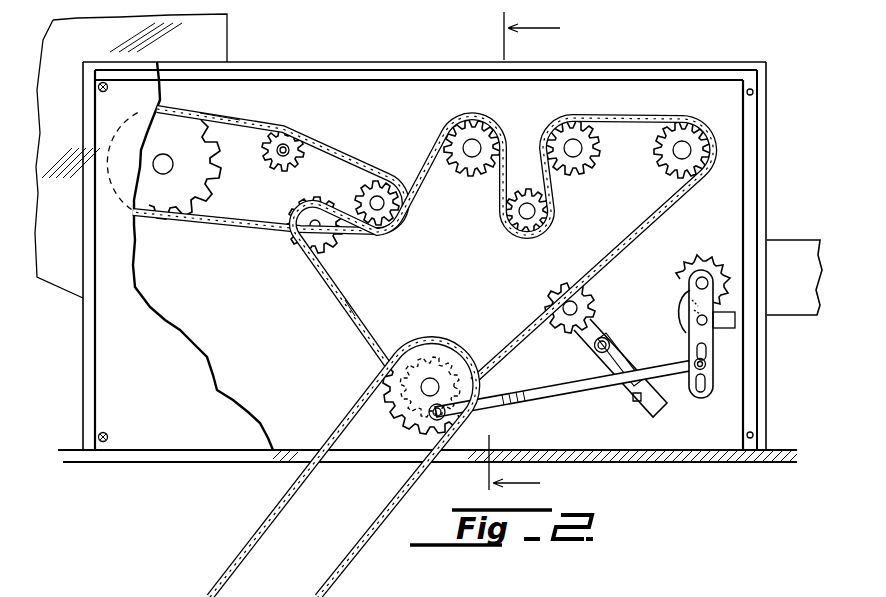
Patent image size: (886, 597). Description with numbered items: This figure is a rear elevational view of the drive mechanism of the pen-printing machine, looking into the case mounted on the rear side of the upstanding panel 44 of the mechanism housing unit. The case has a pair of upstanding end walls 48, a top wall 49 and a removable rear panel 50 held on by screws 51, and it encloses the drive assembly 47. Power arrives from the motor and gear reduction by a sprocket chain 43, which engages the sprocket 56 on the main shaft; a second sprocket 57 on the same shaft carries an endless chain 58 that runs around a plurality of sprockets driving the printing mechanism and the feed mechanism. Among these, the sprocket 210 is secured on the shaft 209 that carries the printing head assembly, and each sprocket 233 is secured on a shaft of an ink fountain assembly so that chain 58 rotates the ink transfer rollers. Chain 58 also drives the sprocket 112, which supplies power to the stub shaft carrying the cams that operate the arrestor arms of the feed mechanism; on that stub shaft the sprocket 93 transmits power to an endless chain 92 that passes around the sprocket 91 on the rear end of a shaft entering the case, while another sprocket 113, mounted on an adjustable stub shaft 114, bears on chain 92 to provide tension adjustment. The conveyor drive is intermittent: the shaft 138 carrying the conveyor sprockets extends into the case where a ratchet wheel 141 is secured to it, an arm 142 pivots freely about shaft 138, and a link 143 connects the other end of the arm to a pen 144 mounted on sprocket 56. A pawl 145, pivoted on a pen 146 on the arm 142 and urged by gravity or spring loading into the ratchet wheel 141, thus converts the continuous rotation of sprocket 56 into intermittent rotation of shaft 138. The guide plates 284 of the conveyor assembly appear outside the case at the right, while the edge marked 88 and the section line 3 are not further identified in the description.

The section line 3- 3 is at (524, 253).
The sprocket chain 43 is at (340, 578).
The upstanding panel 44 is at (393, 119).
The drive assembly 47 is at (634, 87).
The end walls 48 is at (768, 155).
The top wall 49 is at (351, 61).
The removable rear panel 50 is at (200, 400).
The screws 51 is at (108, 87).
The sprocket 56 is at (394, 420).
The sprocket 57 is at (442, 338).
The endless chain 58 is at (352, 308).
The broken-away plate edge 88 is at (163, 163).
The sprocket 91 is at (182, 197).
The endless chain 92 is at (232, 122).
The sprocket 93 is at (352, 188).
The sprocket 112 is at (382, 184).
The sprocket 113 is at (274, 168).
The adjustable stub shaft 114 is at (290, 142).
The shaft 138 is at (688, 286).
The ratchet wheel 141 is at (712, 262).
The arm 142 is at (688, 336).
The link 143 is at (580, 396).
The pen 144 is at (448, 412).
The pawl 145 is at (684, 318).
The pen 146 is at (708, 315).
The shaft 209 is at (573, 140).
The sprocket 210 is at (584, 186).
The sprocket 233 is at (463, 140).
The guide plates 284 is at (782, 246).